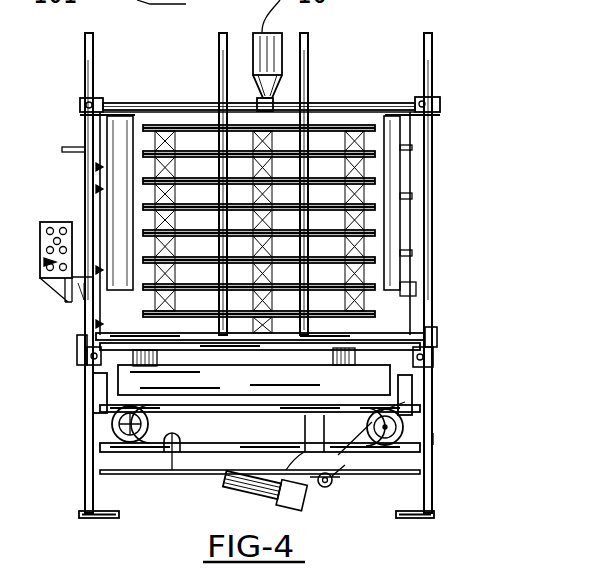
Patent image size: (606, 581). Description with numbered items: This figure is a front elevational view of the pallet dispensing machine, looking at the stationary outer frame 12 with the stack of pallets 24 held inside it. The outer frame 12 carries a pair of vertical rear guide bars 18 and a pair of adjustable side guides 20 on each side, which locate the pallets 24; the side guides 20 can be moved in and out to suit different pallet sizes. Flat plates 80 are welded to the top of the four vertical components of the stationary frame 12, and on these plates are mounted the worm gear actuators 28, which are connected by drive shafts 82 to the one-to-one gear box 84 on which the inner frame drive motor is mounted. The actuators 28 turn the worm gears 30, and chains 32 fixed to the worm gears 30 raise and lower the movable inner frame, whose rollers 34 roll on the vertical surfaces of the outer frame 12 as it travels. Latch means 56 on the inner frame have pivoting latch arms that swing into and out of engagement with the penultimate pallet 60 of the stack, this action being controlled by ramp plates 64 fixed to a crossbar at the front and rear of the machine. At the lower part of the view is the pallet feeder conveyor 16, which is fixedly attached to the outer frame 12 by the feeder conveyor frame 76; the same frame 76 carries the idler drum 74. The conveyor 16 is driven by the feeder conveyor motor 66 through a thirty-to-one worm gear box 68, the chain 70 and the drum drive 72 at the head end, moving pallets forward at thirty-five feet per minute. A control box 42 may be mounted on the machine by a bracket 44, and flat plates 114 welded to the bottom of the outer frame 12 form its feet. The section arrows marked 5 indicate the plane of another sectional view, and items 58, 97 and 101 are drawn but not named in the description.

The section line 5- 5 is at (533, 303).
The stationary outer frame 12 is at (105, 188).
The pallet feeder conveyor 16 is at (433, 433).
The vertical rear guide bars 18 is at (221, 50).
The adjustable side guides 20 is at (124, 122).
The pallets 24 is at (325, 100).
The worm gear actuators 28 is at (80, 102).
The worm gears 30 is at (86, 48).
The chains 32 is at (95, 175).
The rollers 34 is at (78, 358).
The control box 42 is at (52, 222).
The bracket 44 is at (67, 303).
The latch means 56 is at (93, 377).
The stop block 58 is at (440, 342).
The penultimate pallet 60 is at (421, 310).
The ramp plates 64 is at (100, 407).
The feeder conveyor motor 66 is at (228, 474).
The worm gear box 68 is at (322, 487).
The chain 70 is at (337, 480).
The drum drive 72 is at (420, 463).
The idler drum 74 is at (97, 450).
The feeder conveyor frame 76 is at (172, 465).
The flat plates 80 is at (85, 115).
The drive shafts 82 is at (163, 103).
The gear box 84 is at (255, 94).
The side block 97 is at (78, 330).
The actuator 101 is at (283, 497).
The flat plates 114 is at (85, 517).